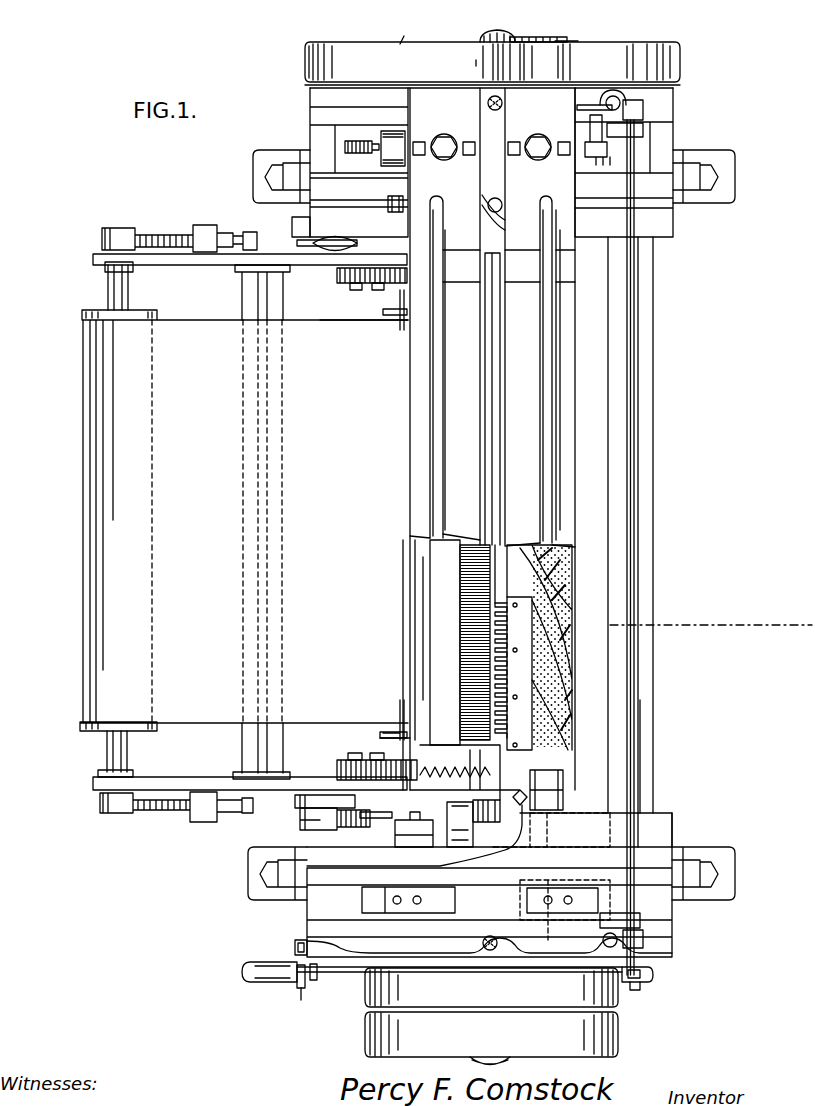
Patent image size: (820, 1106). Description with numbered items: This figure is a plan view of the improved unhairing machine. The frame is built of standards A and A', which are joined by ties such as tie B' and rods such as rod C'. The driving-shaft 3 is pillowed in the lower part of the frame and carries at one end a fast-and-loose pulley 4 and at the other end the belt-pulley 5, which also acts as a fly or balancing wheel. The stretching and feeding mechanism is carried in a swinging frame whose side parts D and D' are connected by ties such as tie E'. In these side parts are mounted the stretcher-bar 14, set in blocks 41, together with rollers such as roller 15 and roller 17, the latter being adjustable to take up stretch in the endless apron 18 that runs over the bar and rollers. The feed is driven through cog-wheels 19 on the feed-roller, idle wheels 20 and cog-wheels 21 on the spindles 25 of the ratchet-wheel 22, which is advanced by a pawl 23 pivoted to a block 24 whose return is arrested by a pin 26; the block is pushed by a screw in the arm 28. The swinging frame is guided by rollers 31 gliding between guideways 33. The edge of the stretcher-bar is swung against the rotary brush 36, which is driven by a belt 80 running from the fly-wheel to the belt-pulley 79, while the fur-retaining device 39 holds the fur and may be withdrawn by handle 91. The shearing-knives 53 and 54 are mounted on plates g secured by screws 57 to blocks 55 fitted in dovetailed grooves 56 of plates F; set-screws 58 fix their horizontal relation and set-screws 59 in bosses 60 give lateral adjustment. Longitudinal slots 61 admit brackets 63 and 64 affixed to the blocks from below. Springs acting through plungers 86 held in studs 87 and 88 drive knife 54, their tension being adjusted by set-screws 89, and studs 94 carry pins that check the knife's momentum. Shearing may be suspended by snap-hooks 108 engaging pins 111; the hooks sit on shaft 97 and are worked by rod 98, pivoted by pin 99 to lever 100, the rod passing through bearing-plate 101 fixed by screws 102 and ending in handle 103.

The driving-shaft 3 is at (497, 31).
The fast-and-loose pulley 4 is at (491, 1016).
The belt-pulley 5 is at (406, 33).
The stretcher-bar 14 is at (470, 730).
The roller 15 is at (406, 646).
The roller 17 is at (148, 732).
The endless apron 18 is at (330, 323).
The cog-wheels 19 is at (390, 290).
The idle wheels 20 is at (379, 526).
The cog-wheels 21 is at (337, 278).
The ratchet-wheel 22 is at (375, 812).
The pawl 23 is at (325, 818).
The block 24 is at (305, 245).
The spindle 25 is at (349, 292).
The pin 26 is at (336, 247).
The arm 28 is at (414, 829).
The rollers 31 is at (486, 811).
The guideways 33 is at (445, 817).
The rotary brush 36 is at (541, 37).
The fur-retaining device 39 is at (445, 642).
The blocks 41 is at (437, 765).
The shearing-knife 53 is at (482, 342).
The shearing-knife 54 is at (502, 345).
The blocks 55 is at (337, 130).
The dovetailed grooves 56 is at (489, 885).
The screws 57 is at (491, 147).
The set-screws 58 is at (564, 163).
The set-screws 59 is at (352, 156).
The bosses 60 is at (393, 148).
The longitudinal slots 61 is at (492, 900).
The bracket 63 is at (418, 900).
The bracket 64 is at (562, 900).
The belt-pulley 79 is at (568, 40).
The belt 80 is at (492, 63).
The plungers 86 is at (577, 108).
The stud 87 is at (488, 206).
The stud 88 is at (621, 101).
The set-screws 89 is at (395, 212).
The handle 91 is at (397, 316).
The studs 94 is at (503, 102).
The shaft 97 is at (636, 548).
The rod 98 is at (345, 975).
The pin 99 is at (645, 988).
The lever 100 is at (655, 974).
The bearing-plate 101 is at (306, 990).
The screws 102 is at (294, 947).
The handle 103 is at (240, 972).
The snap-hooks 108 is at (645, 130).
The pins 111 is at (605, 140).
The standard A is at (703, 873).
The standard A' is at (704, 176).
The tie B' is at (697, 624).
The rod C' is at (657, 756).
The side part D is at (250, 259).
The side part D' is at (250, 788).
The tie E' is at (252, 522).
The plate F is at (596, 467).
The plates g is at (502, 380).